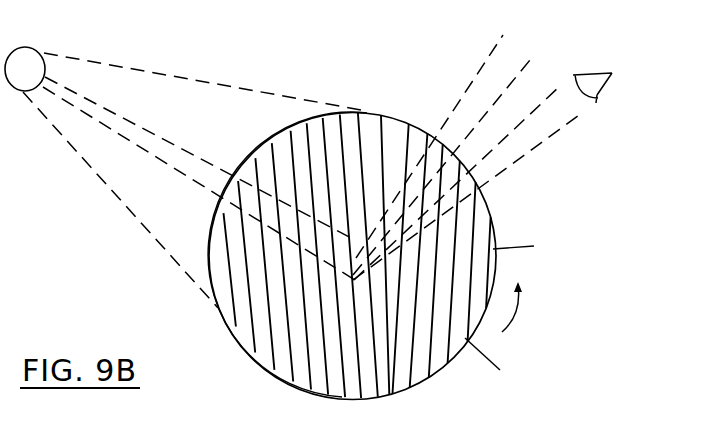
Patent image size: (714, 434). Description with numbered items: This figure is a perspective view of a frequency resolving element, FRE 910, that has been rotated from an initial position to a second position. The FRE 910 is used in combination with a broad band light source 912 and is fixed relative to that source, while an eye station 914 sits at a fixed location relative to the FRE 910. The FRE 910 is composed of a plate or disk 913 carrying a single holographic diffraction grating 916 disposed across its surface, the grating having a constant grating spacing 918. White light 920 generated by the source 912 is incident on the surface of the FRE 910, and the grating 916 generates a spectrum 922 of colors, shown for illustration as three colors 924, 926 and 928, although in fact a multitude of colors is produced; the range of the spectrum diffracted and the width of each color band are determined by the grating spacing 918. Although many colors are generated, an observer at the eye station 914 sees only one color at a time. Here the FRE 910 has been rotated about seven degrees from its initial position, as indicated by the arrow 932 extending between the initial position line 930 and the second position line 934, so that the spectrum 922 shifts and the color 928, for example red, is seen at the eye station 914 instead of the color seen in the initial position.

The FRE 910 is at (150, 300).
The broad band light source 912 is at (26, 47).
The disk 913 is at (250, 349).
The eye station 914 is at (600, 88).
The holographic diffraction grating 916 is at (491, 211).
The grating spacing 918 is at (317, 377).
The white light 920 is at (240, 88).
The spectrum 922 is at (478, 55).
The color 924 is at (508, 57).
The color 926 is at (539, 80).
The color 928 is at (542, 122).
The line 930 is at (492, 360).
The arrow 932 is at (520, 307).
The line 934 is at (534, 246).